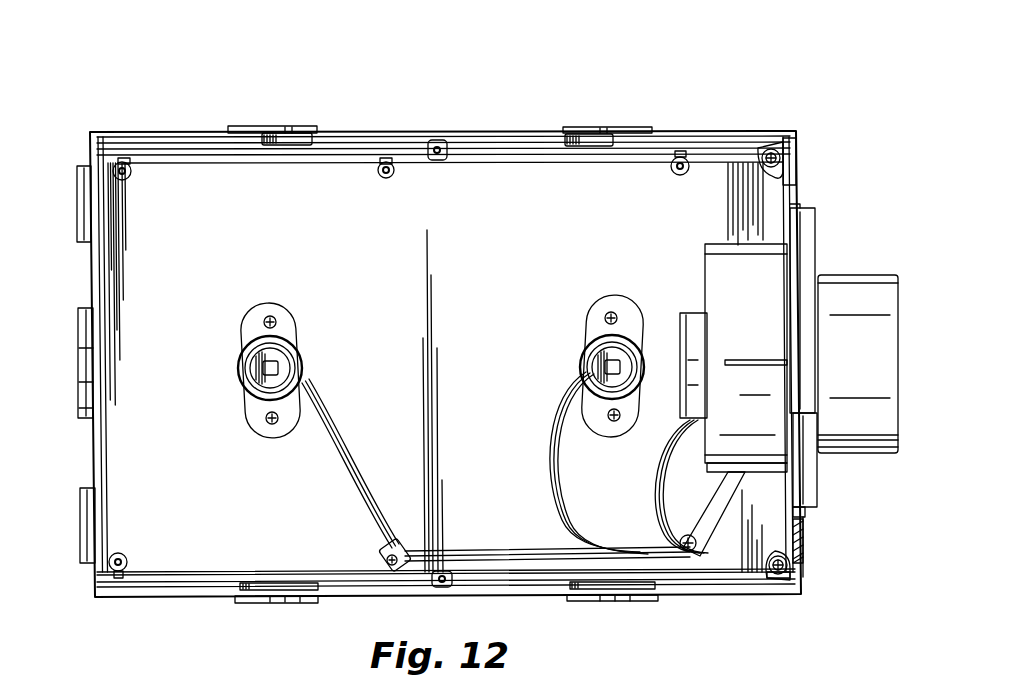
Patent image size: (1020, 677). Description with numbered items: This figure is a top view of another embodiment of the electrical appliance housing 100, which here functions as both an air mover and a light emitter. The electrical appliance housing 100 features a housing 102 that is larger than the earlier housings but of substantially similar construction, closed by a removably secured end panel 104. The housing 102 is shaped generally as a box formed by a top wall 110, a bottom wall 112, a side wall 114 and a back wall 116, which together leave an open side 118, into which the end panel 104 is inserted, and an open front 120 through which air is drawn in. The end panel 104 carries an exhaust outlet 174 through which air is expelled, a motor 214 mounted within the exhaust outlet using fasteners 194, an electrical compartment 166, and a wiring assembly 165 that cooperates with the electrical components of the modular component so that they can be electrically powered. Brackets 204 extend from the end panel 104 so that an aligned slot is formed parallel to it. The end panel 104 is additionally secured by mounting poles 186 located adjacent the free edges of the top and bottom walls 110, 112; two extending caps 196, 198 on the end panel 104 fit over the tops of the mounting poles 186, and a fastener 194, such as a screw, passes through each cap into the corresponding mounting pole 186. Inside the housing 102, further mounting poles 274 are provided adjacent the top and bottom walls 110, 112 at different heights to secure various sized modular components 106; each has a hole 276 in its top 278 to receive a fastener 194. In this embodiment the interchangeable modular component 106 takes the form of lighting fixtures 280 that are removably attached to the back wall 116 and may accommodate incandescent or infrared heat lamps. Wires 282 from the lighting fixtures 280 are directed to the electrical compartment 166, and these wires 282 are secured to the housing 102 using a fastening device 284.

The electrical appliance housing 100 is at (835, 98).
The housing 102 is at (216, 118).
The end panel 104 is at (802, 205).
The modular component 106 is at (150, 296).
The top wall 110 is at (505, 596).
The bottom wall 112 is at (522, 131).
The side wall 114 is at (95, 462).
The back wall 116 is at (481, 375).
The open side 118 is at (805, 533).
The open front 120 is at (362, 583).
The wiring assembly 165 is at (792, 545).
The electrical compartment 166 is at (772, 505).
The exhaust outlet 174 is at (858, 282).
The mounting pole 186 is at (773, 140).
The fastener 194 is at (795, 157).
The cap 196 is at (785, 580).
The cap 198 is at (800, 178).
The bracket 204 is at (80, 185).
The motor 214 is at (690, 312).
The mounting pole 274 is at (130, 162).
The hole 276 is at (128, 172).
The top 278 is at (128, 180).
The lighting fixture 280 is at (303, 360).
The wire 282 is at (553, 440).
The fastening device 284 is at (397, 542).